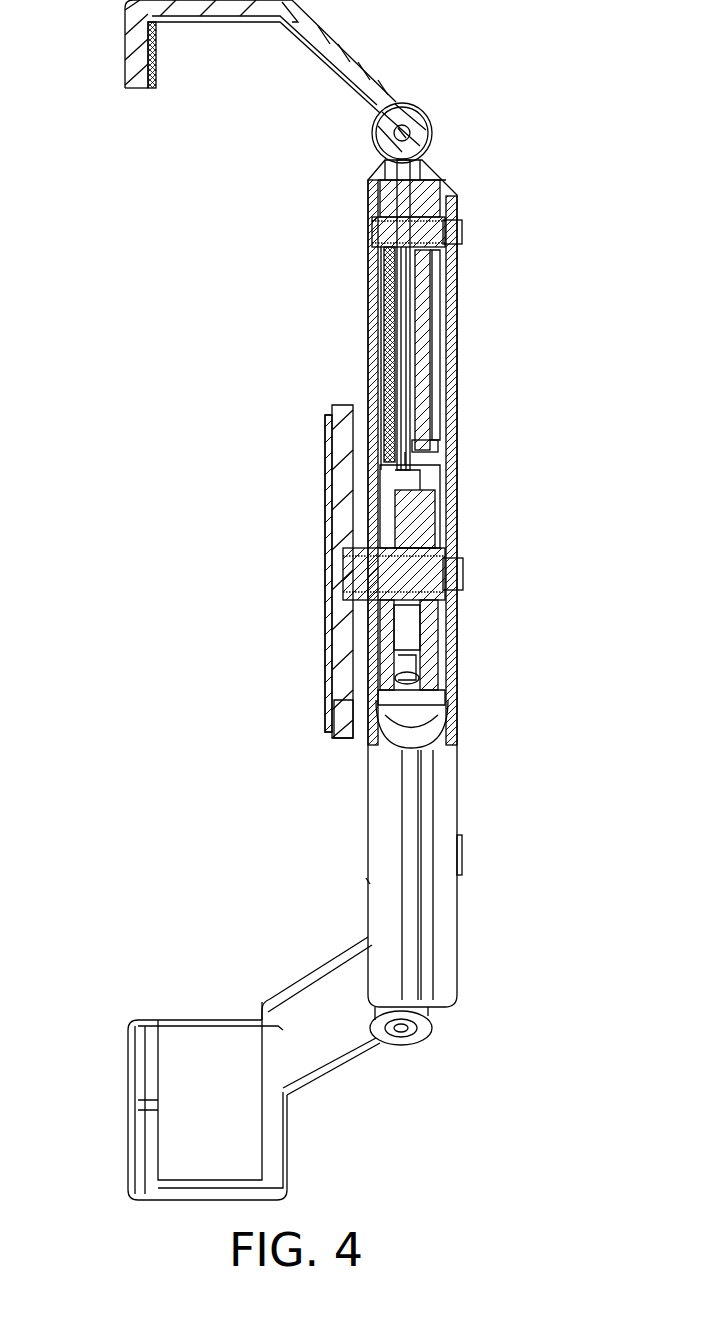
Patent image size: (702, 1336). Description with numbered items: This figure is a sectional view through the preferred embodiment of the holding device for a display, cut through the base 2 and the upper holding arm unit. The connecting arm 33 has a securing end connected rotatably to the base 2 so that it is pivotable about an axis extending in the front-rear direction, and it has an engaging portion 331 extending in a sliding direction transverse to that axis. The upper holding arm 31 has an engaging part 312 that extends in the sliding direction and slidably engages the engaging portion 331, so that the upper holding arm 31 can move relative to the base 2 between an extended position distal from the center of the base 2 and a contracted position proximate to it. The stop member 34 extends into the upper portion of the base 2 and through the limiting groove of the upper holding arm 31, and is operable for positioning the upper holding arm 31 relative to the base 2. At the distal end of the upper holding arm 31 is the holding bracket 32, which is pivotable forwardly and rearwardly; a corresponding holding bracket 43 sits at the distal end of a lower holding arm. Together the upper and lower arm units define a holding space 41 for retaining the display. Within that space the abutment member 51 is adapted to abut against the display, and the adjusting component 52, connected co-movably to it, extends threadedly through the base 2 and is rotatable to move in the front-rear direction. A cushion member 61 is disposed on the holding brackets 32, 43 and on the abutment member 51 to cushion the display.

The base 2 is at (480, 832).
The upper holding arm 31 is at (412, 305).
The engaging part 312 is at (400, 185).
The holding bracket 32 is at (125, 42).
The connecting arm 33 is at (383, 318).
The engaging portion 331 is at (385, 281).
The stop member 34 is at (462, 233).
The holding space 41 is at (280, 115).
The holding bracket 43 is at (287, 1160).
The abutment member 51 is at (347, 736).
The adjusting component 52 is at (463, 574).
The cushion member 61 is at (325, 636).